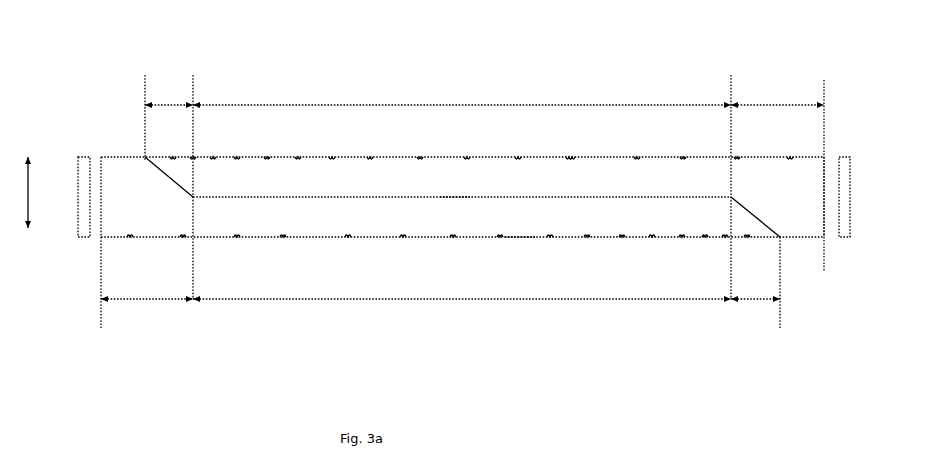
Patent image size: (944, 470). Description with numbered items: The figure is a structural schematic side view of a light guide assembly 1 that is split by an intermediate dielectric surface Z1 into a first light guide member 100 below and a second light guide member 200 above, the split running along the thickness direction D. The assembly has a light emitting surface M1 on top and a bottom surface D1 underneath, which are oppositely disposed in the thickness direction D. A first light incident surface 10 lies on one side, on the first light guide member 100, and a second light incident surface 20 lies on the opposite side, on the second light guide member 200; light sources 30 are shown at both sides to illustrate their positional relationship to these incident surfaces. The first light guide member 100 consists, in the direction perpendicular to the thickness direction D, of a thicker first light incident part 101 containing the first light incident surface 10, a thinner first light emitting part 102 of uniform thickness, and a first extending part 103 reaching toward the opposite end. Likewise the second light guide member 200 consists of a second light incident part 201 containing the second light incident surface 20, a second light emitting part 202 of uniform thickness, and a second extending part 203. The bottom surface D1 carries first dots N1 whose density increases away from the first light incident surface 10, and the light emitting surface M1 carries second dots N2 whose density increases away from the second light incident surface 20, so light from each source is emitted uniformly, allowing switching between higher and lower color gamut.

The light guide assembly 1 is at (150, 45).
The first light incident surface 10 is at (100, 190).
The second light incident surface 20 is at (825, 198).
The light sources 30 is at (850, 225).
The first light guide member 100 is at (782, 327).
The first light incident part 101 is at (147, 313).
The first light emitting part 102 is at (462, 312).
The first extending part 103 is at (755, 312).
The second light guide member 200 is at (827, 75).
The second light incident part 201 is at (777, 91).
The second light emitting part 202 is at (462, 91).
The second extending part 203 is at (169, 96).
The light emitting surface M1 is at (485, 157).
The first dots N1 is at (549, 237).
The second dots N2 is at (566, 160).
The intermediate dielectric surface Z1 is at (453, 197).
The bottom surface D1 is at (520, 240).
The thickness direction D is at (28, 195).